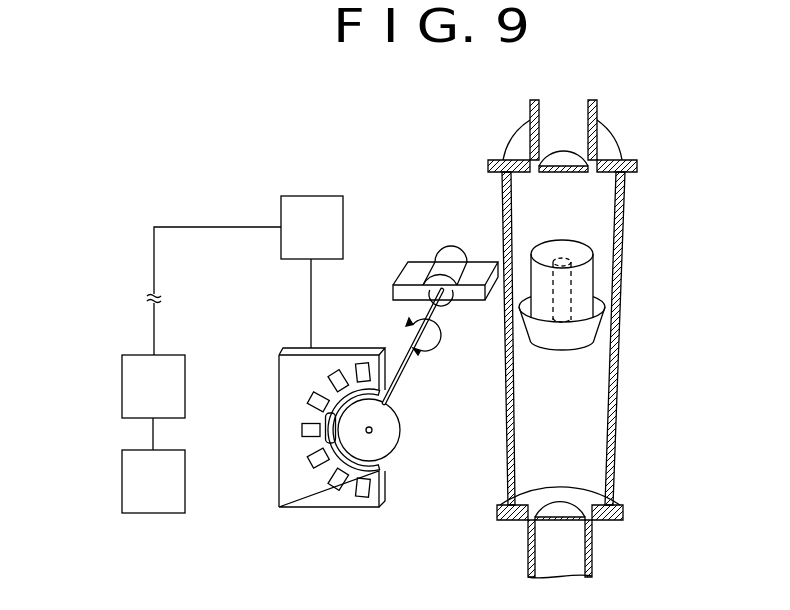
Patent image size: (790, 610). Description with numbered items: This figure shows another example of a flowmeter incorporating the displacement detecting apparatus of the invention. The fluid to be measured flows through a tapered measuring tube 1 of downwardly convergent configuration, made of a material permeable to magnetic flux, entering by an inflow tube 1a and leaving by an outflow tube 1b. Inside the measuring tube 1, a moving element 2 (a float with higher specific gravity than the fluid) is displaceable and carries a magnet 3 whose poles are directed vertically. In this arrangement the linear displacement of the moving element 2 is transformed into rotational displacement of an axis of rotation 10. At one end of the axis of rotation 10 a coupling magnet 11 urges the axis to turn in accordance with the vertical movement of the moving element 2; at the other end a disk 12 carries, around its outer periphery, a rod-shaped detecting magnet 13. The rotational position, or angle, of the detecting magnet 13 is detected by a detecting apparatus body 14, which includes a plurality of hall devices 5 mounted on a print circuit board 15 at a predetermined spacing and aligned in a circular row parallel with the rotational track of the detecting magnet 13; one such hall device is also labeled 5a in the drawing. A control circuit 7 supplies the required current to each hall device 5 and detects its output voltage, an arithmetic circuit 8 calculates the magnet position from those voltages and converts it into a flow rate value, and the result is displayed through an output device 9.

The tapered measuring tube 1 is at (623, 210).
The inflow tube 1a is at (592, 548).
The outflow tube 1b is at (597, 103).
The moving element 2 is at (590, 280).
The magnet 3 is at (600, 328).
The hall device 5 is at (352, 375).
The coil 5a is at (350, 493).
The control circuit 7 is at (299, 196).
The arithmetic circuit 8 is at (122, 390).
The output device 9 is at (122, 483).
The axis of rotation 10 is at (405, 367).
The coupling magnet 11 is at (429, 264).
The disk 12 is at (390, 447).
The detecting magnet 13 is at (325, 418).
The detecting apparatus body 14 is at (278, 488).
The print circuit board 15 is at (279, 460).